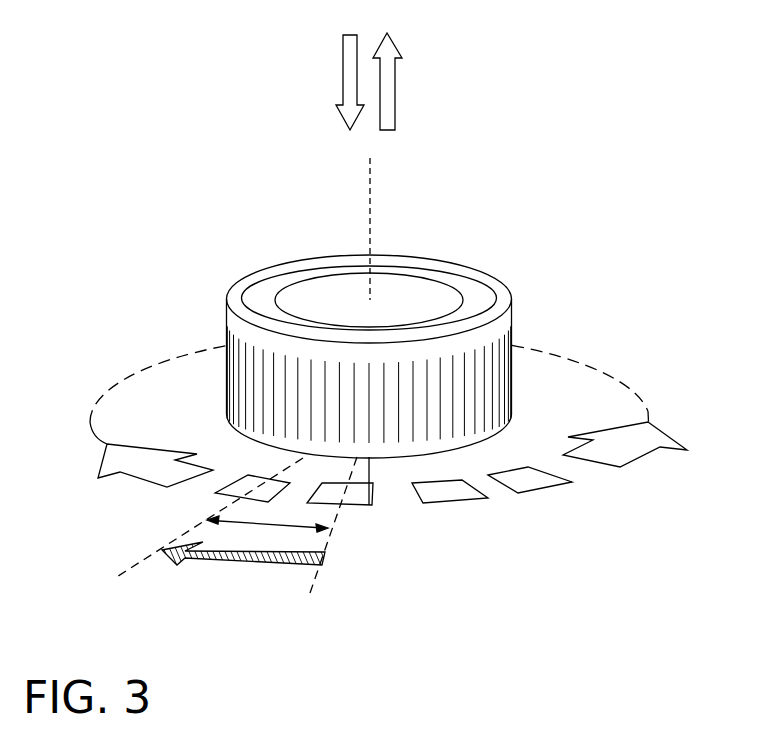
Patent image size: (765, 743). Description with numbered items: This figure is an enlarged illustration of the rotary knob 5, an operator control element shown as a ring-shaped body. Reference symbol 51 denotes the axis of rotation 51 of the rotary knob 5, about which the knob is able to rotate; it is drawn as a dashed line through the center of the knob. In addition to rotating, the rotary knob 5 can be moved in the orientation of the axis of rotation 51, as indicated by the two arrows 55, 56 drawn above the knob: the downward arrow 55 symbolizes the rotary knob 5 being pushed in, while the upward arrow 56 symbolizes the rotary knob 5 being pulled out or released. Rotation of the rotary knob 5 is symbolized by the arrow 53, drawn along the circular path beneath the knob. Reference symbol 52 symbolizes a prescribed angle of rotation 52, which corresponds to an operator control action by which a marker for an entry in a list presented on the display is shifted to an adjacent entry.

The rotary knob 5 is at (428, 297).
The axis of rotation 51 is at (370, 178).
The prescribed angle of rotation 52 is at (303, 530).
The arrow 53 is at (247, 558).
The arrow 55 is at (351, 72).
The arrow 56 is at (388, 81).